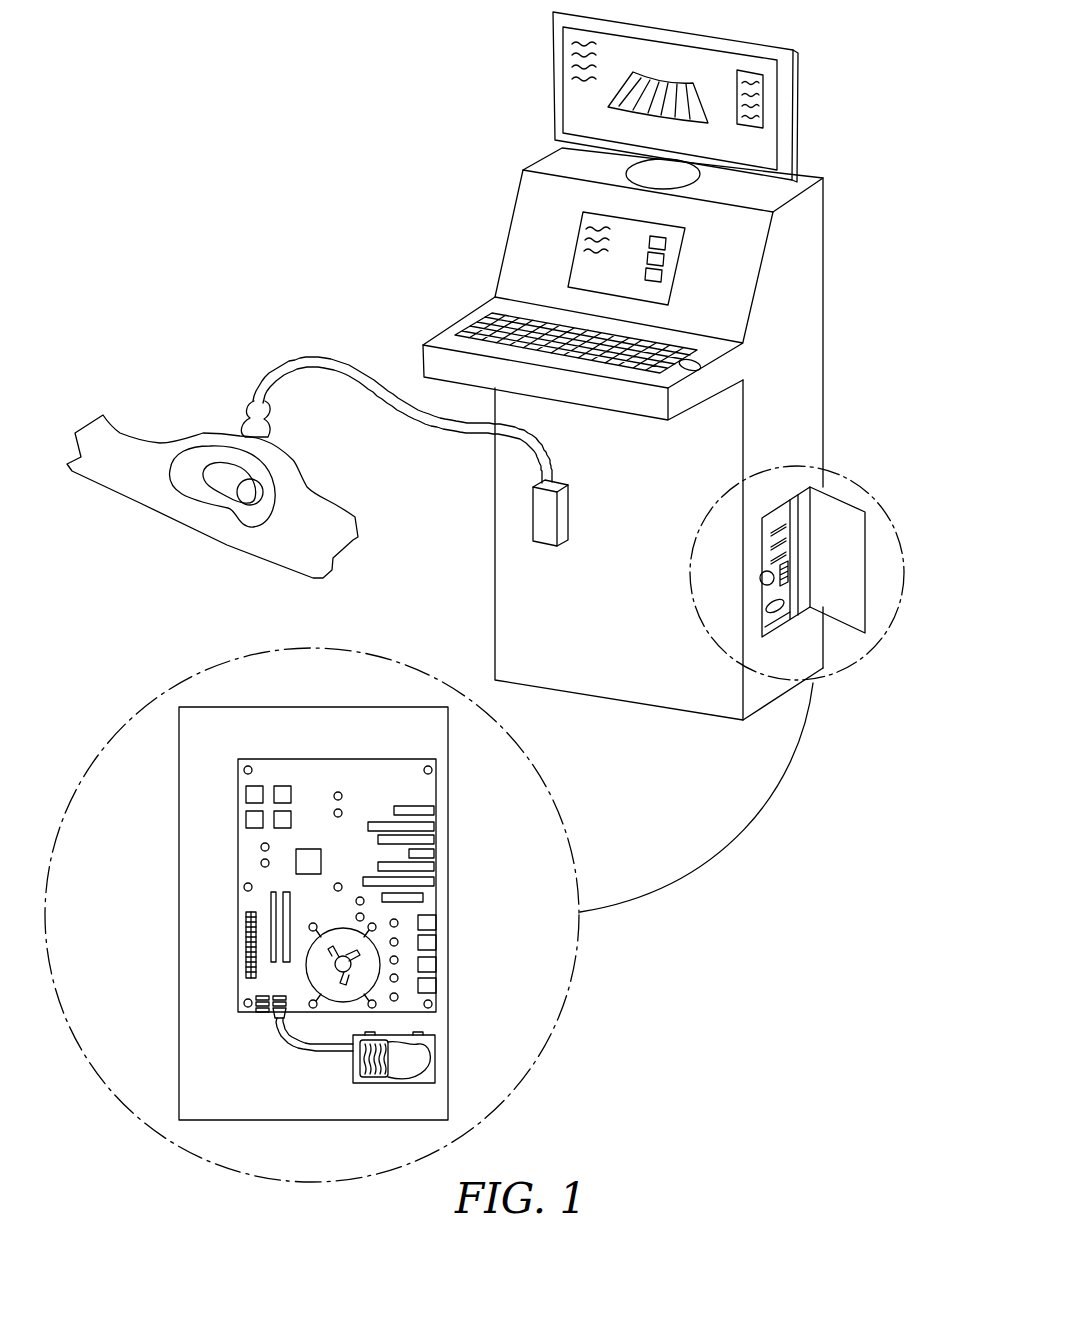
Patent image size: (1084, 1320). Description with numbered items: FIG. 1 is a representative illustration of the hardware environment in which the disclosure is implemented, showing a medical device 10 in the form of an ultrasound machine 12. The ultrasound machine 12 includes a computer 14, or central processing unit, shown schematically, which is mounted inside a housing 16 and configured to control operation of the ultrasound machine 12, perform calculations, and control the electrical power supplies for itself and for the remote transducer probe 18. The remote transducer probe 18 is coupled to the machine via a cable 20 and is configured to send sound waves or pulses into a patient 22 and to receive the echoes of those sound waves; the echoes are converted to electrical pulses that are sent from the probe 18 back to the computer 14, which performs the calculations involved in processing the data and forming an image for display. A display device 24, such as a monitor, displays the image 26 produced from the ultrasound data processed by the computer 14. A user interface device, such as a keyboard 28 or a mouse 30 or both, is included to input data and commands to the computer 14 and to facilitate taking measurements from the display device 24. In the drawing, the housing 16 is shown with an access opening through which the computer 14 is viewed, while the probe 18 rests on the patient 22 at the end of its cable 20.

The medical device 10 is at (838, 99).
The ultrasound machine 12 is at (823, 167).
The computer 14 is at (588, 812).
The housing 16 is at (866, 481).
The remote transducer probe 18 is at (239, 405).
The cable 20 is at (352, 364).
The patient 22 is at (313, 474).
The display device 24 is at (575, 93).
The image 26 is at (608, 120).
The keyboard 28 is at (697, 337).
The mouse 30 is at (707, 366).